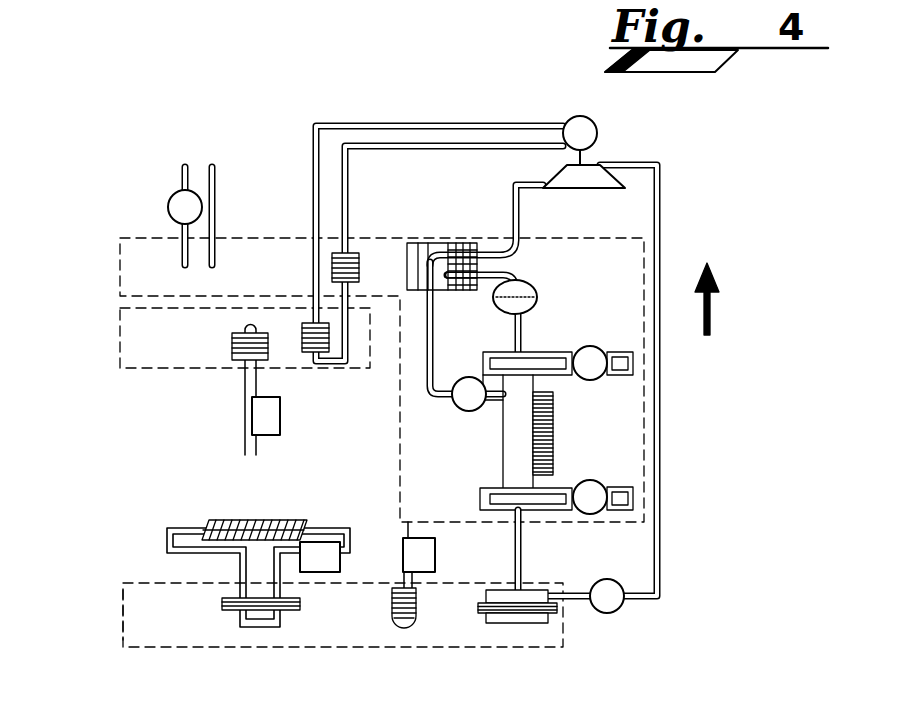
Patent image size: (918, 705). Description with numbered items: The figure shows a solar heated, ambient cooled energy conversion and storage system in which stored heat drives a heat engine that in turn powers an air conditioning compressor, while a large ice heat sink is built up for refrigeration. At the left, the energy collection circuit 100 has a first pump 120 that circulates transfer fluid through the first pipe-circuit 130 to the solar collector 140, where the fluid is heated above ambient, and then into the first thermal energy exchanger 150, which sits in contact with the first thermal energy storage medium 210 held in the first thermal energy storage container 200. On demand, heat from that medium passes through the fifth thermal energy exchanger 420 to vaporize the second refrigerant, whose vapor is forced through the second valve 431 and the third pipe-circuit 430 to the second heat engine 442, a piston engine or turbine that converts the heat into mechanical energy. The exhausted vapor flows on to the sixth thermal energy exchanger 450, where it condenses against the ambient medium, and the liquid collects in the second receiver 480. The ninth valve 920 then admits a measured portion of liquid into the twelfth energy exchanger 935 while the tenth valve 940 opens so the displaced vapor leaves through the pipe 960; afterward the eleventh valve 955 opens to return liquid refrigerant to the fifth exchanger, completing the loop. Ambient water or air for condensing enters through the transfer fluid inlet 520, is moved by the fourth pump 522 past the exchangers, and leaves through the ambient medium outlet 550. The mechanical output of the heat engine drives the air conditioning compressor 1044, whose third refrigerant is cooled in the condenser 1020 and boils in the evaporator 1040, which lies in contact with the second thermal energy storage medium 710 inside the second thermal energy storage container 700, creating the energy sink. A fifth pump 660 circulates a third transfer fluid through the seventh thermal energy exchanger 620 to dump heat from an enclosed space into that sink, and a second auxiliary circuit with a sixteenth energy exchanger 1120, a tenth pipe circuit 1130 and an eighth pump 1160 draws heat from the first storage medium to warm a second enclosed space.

The energy collection circuit 100 is at (108, 455).
The first pump 120 is at (320, 542).
The first pipe-circuit 130 is at (238, 563).
The solar collector 140 is at (247, 520).
The first thermal energy exchanger 150 is at (232, 603).
The first thermal energy storage container 200 is at (123, 636).
The first thermal energy storage medium 210 is at (132, 602).
The fifth thermal energy exchanger 420 is at (540, 617).
The third pipe-circuit 430 is at (552, 548).
The second valve 431 is at (595, 578).
The second heat engine 442 is at (600, 188).
The sixth thermal energy exchanger 450 is at (425, 243).
The second receiver 480 is at (537, 290).
The transfer fluid inlet 520 is at (182, 168).
The fourth pump 522 is at (168, 205).
The ambient medium outlet 550 is at (217, 202).
The seventh thermal energy exchanger 620 is at (232, 348).
The fifth pump 660 is at (280, 408).
The second thermal energy storage container 700 is at (363, 372).
The second thermal energy storage medium 710 is at (232, 346).
The ninth valve 920 is at (593, 380).
The twelfth energy exchanger 935 is at (555, 425).
The tenth valve 940 is at (460, 410).
The eleventh valve 955 is at (596, 480).
The pipe 960 is at (468, 328).
The condenser 1020 is at (359, 268).
The evaporator 1040 is at (302, 345).
The air conditioning compressor 1044 is at (597, 133).
The sixteenth energy exchanger 1120 is at (390, 603).
The tenth pipe circuit 1130 is at (403, 552).
The eighth pump 1160 is at (473, 548).